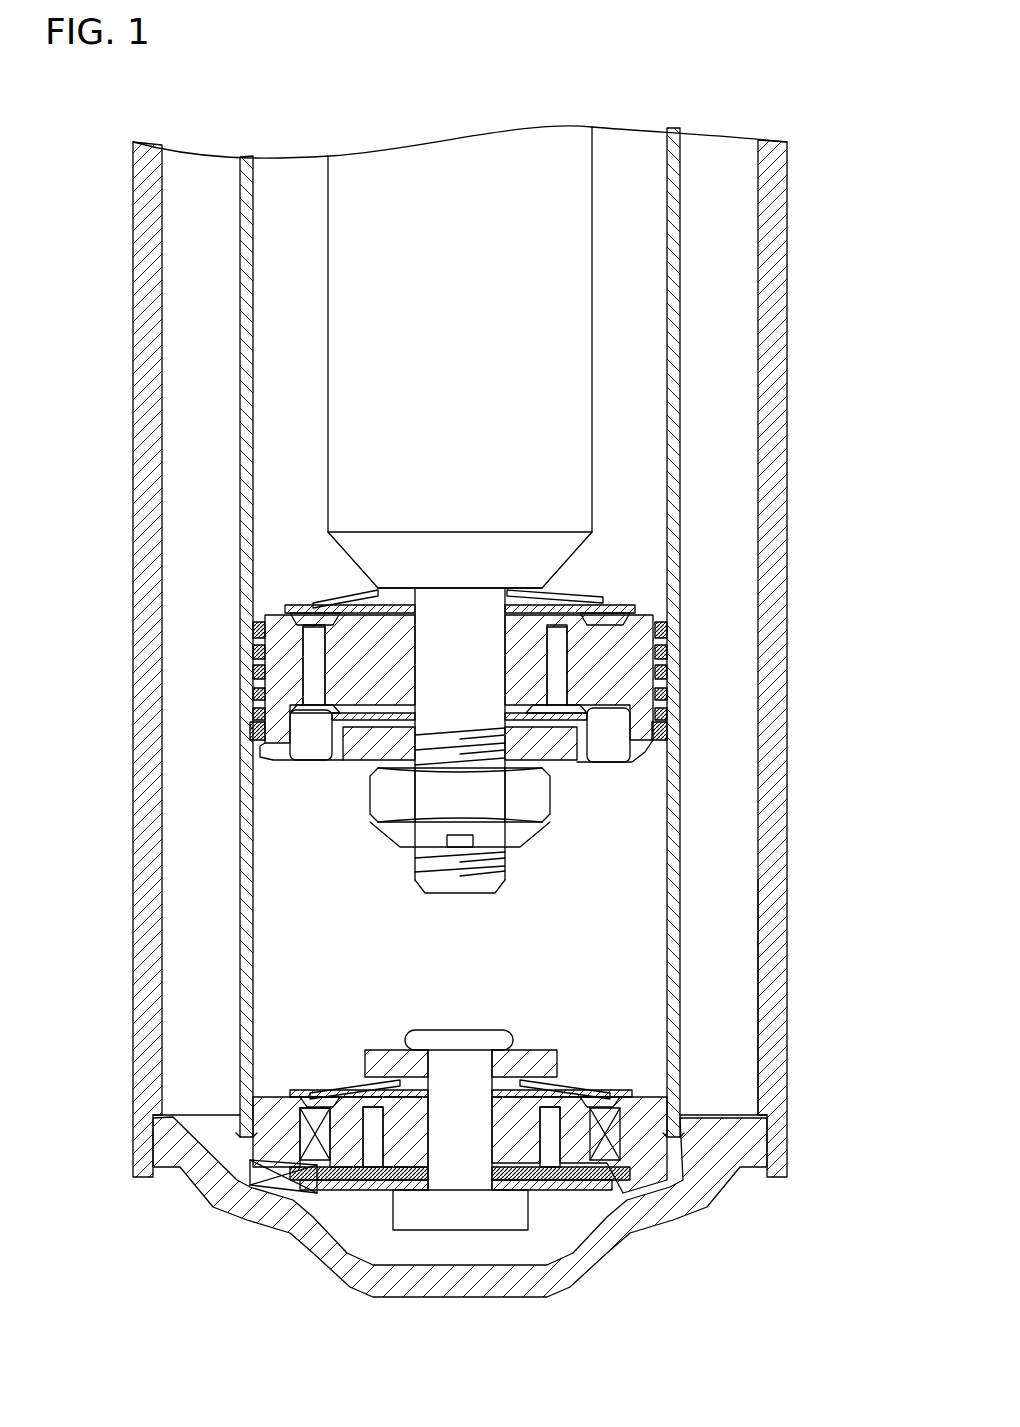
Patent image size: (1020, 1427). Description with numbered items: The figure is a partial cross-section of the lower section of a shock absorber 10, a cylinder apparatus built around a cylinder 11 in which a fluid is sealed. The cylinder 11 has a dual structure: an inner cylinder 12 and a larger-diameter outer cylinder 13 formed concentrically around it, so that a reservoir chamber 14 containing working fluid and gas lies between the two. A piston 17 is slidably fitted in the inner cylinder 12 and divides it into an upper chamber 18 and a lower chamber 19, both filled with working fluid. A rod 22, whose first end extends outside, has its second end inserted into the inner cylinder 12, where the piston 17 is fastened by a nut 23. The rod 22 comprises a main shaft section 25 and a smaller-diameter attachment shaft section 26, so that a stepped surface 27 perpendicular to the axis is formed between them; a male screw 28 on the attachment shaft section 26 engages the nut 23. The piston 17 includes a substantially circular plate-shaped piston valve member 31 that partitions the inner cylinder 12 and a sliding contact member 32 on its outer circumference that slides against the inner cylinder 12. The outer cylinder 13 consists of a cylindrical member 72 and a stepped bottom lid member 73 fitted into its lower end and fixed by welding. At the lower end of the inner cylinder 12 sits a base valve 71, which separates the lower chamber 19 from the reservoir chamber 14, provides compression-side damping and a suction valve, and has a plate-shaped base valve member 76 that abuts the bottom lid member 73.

The shock absorber 10 is at (822, 133).
The cylinder 11 is at (800, 248).
The inner cylinder 12 is at (678, 346).
The outer cylinder 13 is at (787, 371).
The reservoir chamber 14 is at (723, 433).
The piston 17 is at (650, 608).
The upper chamber 18 is at (280, 466).
The lower chamber 19 is at (289, 859).
The rod 22 is at (597, 184).
The nut 23 is at (540, 797).
The main shaft section 25 is at (472, 165).
The attachment shaft section 26 is at (460, 673).
The stepped surface 27 is at (462, 597).
The male screw 28 is at (470, 856).
The piston valve member 31 is at (637, 658).
The sliding contact member 32 is at (665, 697).
The base valve 71 is at (648, 1097).
The cylindrical member 72 is at (770, 903).
The bottom lid member 73 is at (688, 1200).
The base valve member 76 is at (628, 1143).